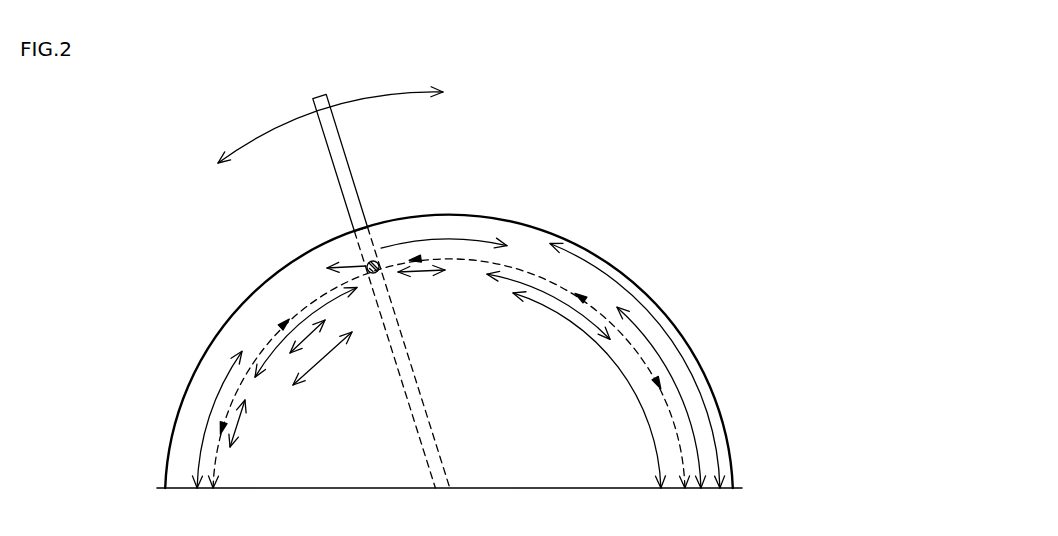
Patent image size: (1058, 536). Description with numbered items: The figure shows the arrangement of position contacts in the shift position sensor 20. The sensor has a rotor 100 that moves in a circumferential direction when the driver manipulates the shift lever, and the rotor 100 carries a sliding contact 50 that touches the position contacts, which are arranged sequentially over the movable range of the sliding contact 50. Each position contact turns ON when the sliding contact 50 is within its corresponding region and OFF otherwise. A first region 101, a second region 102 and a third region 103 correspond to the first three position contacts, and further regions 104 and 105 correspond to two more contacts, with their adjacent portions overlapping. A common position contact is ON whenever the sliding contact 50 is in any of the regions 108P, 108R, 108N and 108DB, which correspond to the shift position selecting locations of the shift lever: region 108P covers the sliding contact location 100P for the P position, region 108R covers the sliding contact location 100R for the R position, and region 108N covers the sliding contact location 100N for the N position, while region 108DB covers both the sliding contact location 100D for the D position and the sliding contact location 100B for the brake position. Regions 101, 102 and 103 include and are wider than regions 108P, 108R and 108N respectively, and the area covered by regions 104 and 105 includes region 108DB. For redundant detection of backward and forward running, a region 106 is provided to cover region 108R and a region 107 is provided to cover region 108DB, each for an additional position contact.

The shift position sensor 20 is at (731, 84).
The rotor 100 is at (338, 152).
The sliding contact 50 is at (378, 261).
The sliding contact location 100N is at (423, 257).
The sliding contact location 100R is at (283, 318).
The sliding contact location 100D is at (580, 297).
The sliding contact location 100B is at (660, 381).
The sliding contact location 100P is at (220, 432).
The region 101 is at (217, 388).
The region 102 is at (313, 297).
The region 103 is at (468, 242).
The region 104 is at (517, 277).
The region 105 is at (653, 338).
The region 106 is at (322, 353).
The region 107 is at (610, 366).
The region 108DB is at (578, 257).
The region 108N is at (423, 276).
The region 108R is at (309, 340).
The region 108P is at (237, 424).